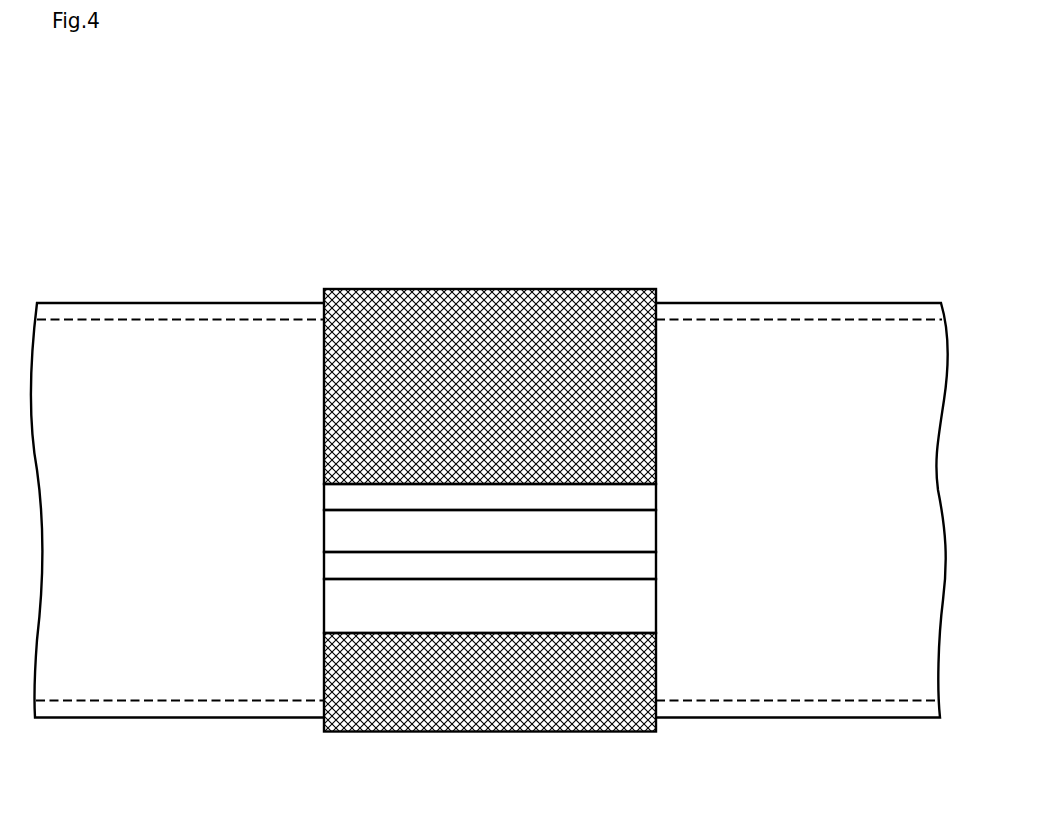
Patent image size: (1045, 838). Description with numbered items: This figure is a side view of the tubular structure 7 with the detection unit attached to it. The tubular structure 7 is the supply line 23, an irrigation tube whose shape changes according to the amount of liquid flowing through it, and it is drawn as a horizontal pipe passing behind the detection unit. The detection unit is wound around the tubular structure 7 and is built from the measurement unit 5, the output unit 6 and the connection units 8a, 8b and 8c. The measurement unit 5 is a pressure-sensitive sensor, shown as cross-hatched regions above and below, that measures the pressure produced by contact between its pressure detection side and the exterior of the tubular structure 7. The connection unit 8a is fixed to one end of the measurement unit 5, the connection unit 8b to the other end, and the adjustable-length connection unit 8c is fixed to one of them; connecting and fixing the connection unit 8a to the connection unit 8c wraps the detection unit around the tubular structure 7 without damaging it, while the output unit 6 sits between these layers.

The tubular structure 7 is at (489, 476).
The supply line 23 is at (190, 302).
The measurement unit 5 is at (490, 289).
The connection unit 8a is at (324, 496).
The connection unit 8b is at (324, 566).
The connection unit 8c is at (656, 532).
The output unit 6 is at (656, 607).